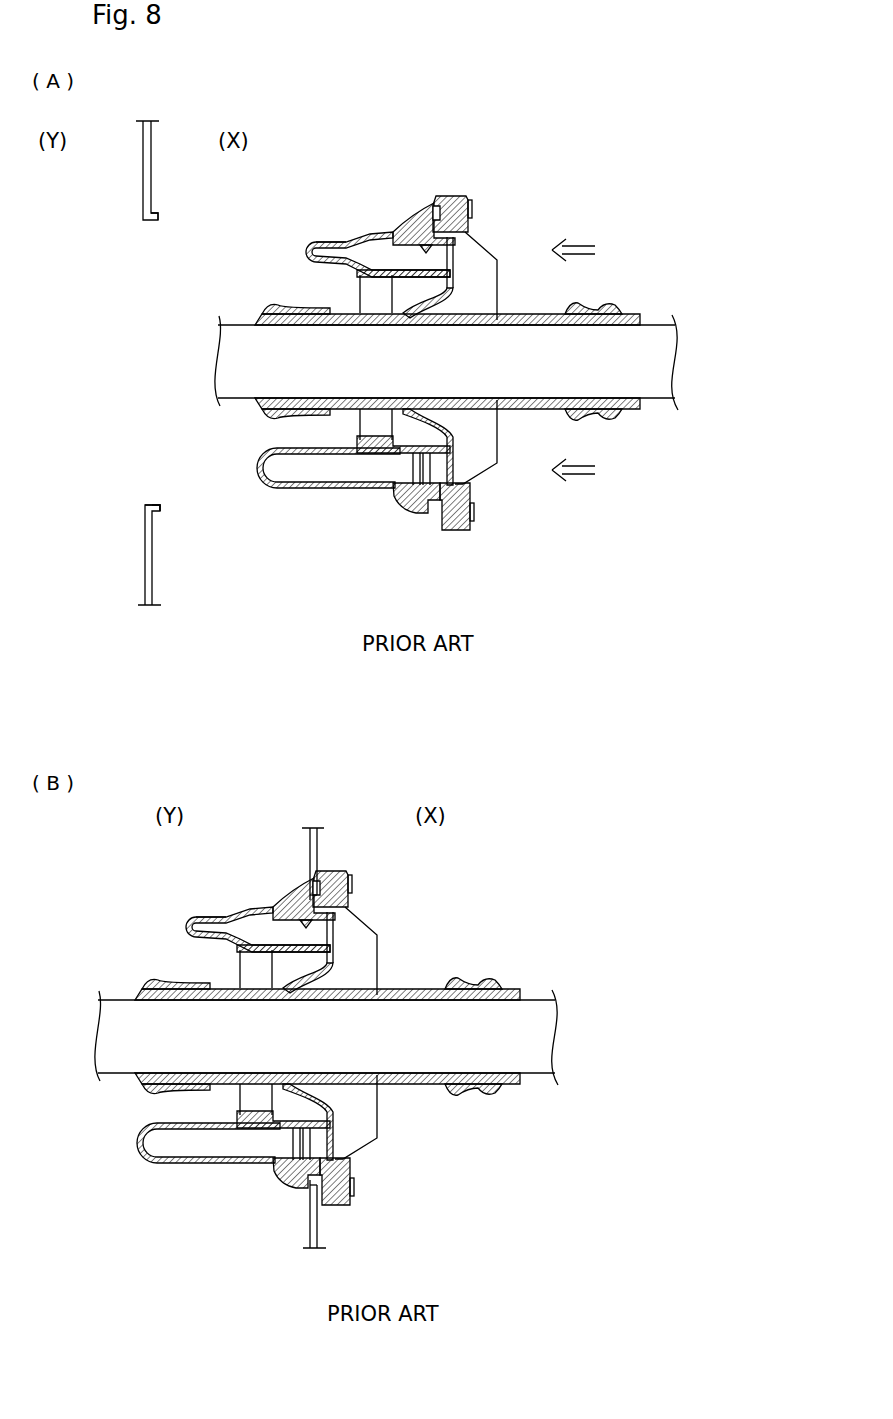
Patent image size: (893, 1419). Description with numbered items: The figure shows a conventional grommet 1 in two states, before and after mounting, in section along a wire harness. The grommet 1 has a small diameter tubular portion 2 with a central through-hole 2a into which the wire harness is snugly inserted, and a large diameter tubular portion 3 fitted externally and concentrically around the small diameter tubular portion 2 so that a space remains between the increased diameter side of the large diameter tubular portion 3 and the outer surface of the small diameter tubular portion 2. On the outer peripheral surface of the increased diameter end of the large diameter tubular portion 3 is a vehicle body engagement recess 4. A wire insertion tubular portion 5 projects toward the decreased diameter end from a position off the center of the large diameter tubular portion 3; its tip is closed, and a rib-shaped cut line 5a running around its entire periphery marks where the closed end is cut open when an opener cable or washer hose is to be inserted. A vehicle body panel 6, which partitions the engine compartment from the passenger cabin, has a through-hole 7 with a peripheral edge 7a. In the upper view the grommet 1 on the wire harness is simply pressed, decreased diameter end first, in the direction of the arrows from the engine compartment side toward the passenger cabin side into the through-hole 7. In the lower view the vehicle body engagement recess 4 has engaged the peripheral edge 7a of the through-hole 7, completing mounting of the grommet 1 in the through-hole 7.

The grommet 1 is at (520, 217).
The small diameter tubular portion 2 is at (521, 402).
The central through-hole 2a is at (612, 367).
The large diameter tubular portion 3 is at (416, 516).
The vehicle body engagement recess 4 is at (432, 207).
The wire insertion tubular portion 5 is at (315, 243).
The rib-shaped cut line 5a is at (325, 243).
The vehicle body panel 6 is at (145, 173).
The through-hole 7 is at (153, 487).
The peripheral edge 7a is at (160, 216).